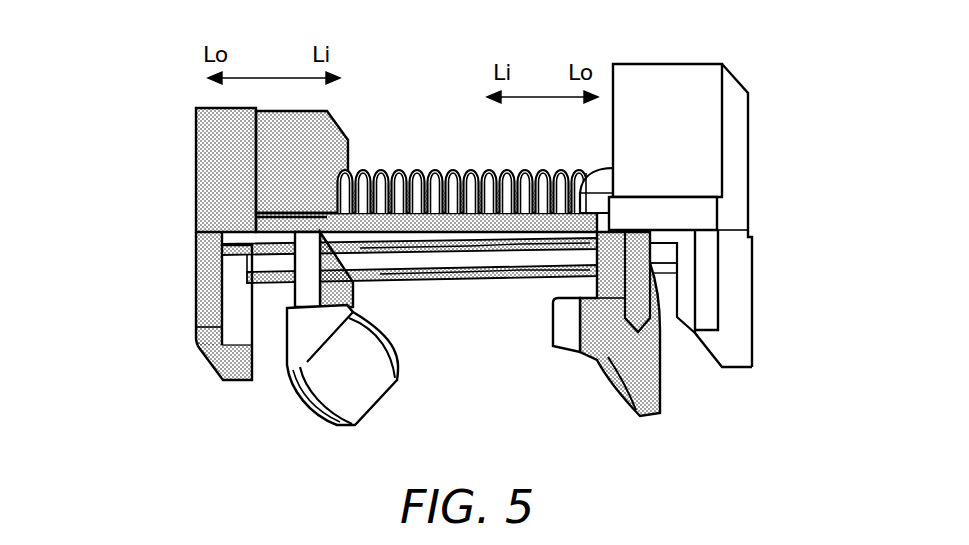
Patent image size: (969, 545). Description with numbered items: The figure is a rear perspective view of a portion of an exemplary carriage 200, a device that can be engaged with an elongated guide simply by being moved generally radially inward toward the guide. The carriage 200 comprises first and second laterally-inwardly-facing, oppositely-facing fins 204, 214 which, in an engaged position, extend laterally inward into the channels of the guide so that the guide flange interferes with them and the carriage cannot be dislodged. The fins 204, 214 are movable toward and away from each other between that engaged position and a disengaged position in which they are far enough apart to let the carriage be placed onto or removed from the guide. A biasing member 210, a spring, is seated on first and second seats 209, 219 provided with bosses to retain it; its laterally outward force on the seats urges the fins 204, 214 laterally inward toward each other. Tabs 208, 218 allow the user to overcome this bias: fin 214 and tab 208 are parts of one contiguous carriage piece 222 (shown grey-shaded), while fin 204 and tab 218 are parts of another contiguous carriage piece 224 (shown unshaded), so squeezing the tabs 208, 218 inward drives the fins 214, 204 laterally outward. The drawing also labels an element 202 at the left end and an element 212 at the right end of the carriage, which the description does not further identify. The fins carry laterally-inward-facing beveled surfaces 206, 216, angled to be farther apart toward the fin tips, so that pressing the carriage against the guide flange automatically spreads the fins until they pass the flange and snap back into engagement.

The carriage 200 is at (139, 61).
The first side member 202 is at (196, 122).
The first fin 204 is at (320, 390).
The beveled surface 206 is at (362, 382).
The tab 208 is at (196, 158).
The first seat 209 is at (340, 186).
The biasing member 210 is at (433, 170).
The second side member 212 is at (738, 72).
The second fin 214 is at (647, 402).
The beveled surface 216 is at (612, 382).
The tab 218 is at (740, 110).
The second seat 219 is at (556, 170).
The carriage piece 222 is at (215, 214).
The carriage piece 224 is at (685, 256).